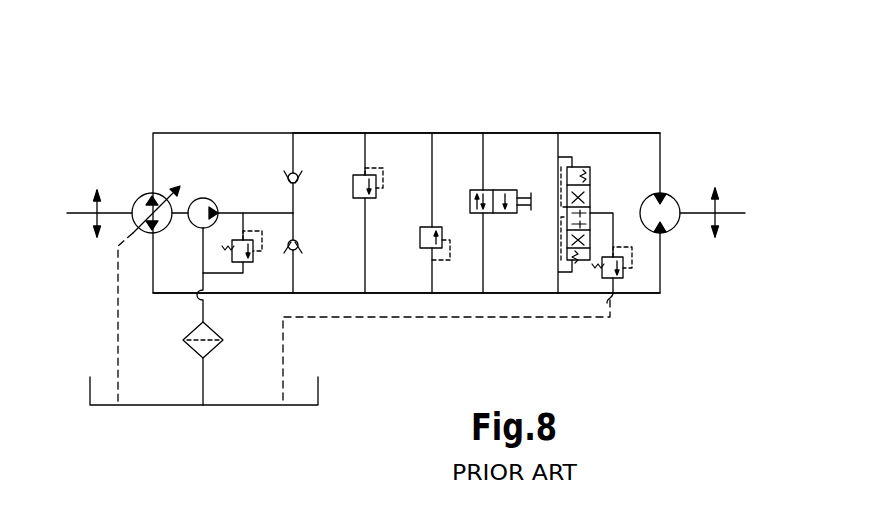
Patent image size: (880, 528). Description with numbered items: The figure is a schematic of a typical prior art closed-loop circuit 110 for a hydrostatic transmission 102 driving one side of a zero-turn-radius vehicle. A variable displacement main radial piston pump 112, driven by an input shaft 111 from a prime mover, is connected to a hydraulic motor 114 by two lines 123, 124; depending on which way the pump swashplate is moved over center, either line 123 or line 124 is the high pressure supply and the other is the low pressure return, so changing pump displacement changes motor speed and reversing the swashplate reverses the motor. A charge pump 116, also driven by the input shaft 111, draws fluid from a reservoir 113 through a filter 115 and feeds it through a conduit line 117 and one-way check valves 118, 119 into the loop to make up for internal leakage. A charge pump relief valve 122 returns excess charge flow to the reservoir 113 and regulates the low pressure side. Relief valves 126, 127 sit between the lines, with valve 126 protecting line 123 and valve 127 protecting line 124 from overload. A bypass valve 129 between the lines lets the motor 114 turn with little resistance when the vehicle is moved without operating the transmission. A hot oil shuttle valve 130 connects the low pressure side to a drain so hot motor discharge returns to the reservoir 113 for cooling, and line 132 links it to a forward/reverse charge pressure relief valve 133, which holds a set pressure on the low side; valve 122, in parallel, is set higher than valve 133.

The hydrostatic transmission 102 is at (188, 126).
The closed-loop circuit 110 is at (391, 241).
The input shaft 111 is at (72, 213).
The variable displacement main radial piston pump 112 is at (137, 208).
The reservoir 113 is at (318, 388).
The hydraulic motor 114 is at (670, 221).
The filter 115 is at (197, 348).
The charge pump 116 is at (203, 198).
The conduit line 117 is at (270, 212).
The one-way check valve 118 is at (298, 172).
The one-way check valve 119 is at (298, 250).
The charge pump relief valve 122 is at (255, 263).
The line 123 is at (462, 133).
The line 124 is at (467, 293).
The relief valve 126 is at (376, 172).
The relief valve 127 is at (422, 248).
The bypass valve 129 is at (493, 190).
The hot oil shuttle valve 130 is at (597, 151).
The line 132 is at (603, 210).
The forward/reverse charge pressure relief valve 133 is at (625, 280).